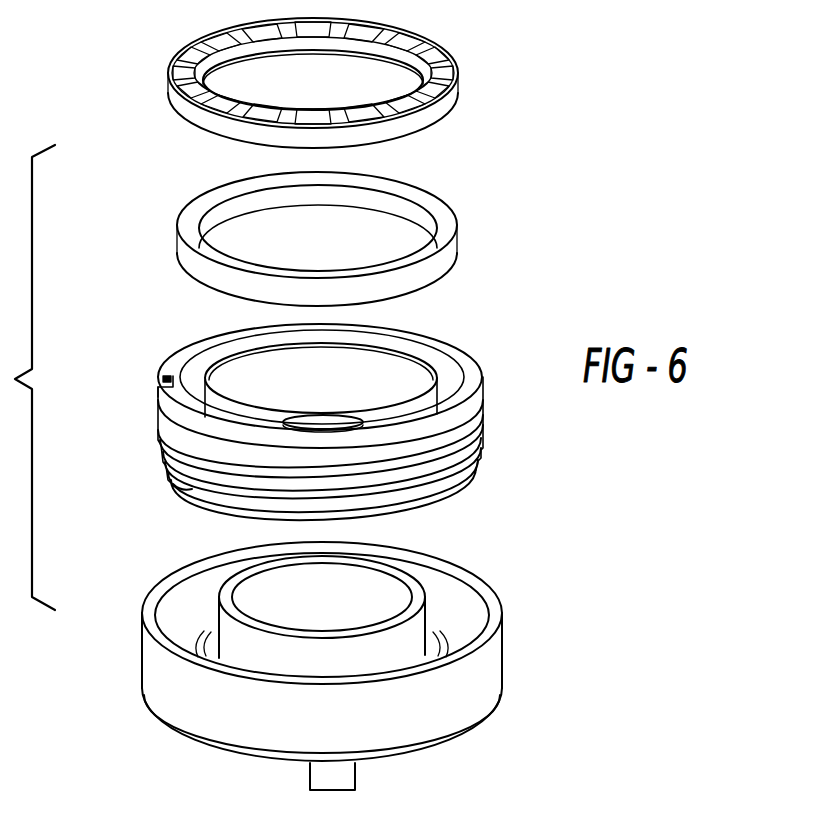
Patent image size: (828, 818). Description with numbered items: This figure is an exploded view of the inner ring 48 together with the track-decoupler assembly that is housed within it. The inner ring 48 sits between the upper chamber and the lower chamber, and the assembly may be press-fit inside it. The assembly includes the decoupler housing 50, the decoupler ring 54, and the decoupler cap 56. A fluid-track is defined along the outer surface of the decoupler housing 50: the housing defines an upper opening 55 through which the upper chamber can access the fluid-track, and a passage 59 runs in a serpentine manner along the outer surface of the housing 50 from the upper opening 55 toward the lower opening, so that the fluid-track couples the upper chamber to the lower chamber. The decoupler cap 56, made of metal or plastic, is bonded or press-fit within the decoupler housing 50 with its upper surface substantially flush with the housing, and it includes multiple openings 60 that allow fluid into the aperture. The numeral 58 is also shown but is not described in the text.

The inner ring 48 is at (503, 653).
The decoupler housing 50 is at (467, 322).
The decoupler ring 54 is at (443, 204).
The upper opening 55 is at (158, 378).
The decoupler cap 56 is at (453, 98).
The mounting stud 58 is at (280, 790).
The passage 59 is at (499, 439).
The openings 60 is at (405, 33).